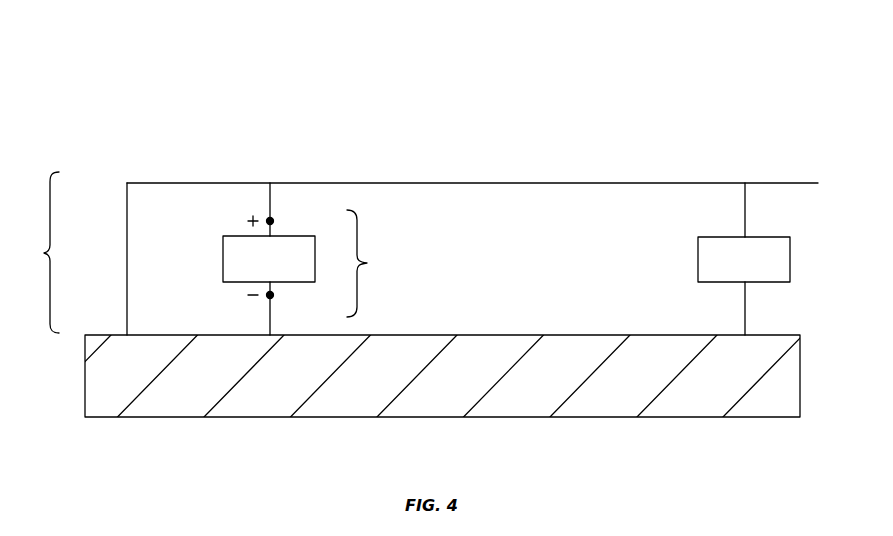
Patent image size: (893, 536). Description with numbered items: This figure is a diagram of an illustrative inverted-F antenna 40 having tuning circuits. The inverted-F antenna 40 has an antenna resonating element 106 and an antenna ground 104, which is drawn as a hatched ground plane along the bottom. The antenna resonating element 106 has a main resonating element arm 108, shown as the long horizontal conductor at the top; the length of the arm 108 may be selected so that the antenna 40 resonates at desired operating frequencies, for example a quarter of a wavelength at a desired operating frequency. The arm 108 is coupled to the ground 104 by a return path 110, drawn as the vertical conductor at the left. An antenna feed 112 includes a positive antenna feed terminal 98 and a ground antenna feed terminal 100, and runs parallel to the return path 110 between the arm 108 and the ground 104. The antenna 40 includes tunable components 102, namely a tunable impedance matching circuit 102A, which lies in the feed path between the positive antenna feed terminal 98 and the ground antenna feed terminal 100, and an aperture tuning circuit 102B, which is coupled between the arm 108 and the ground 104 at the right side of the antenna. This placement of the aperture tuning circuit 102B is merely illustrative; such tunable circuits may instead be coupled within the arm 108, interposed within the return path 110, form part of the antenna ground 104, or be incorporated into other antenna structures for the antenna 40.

The inverted-F antenna 40 is at (627, 67).
The positive antenna feed terminal 98 is at (274, 221).
The ground antenna feed terminal 100 is at (274, 295).
The tunable components 102 is at (325, 233).
The tunable impedance matching circuit 102A is at (233, 236).
The aperture tuning circuit 102B is at (790, 257).
The antenna ground 104 is at (98, 379).
The antenna resonating element 106 is at (441, 253).
The main resonating element arm 108 is at (558, 182).
The return path 110 is at (128, 260).
The antenna feed 112 is at (375, 263).